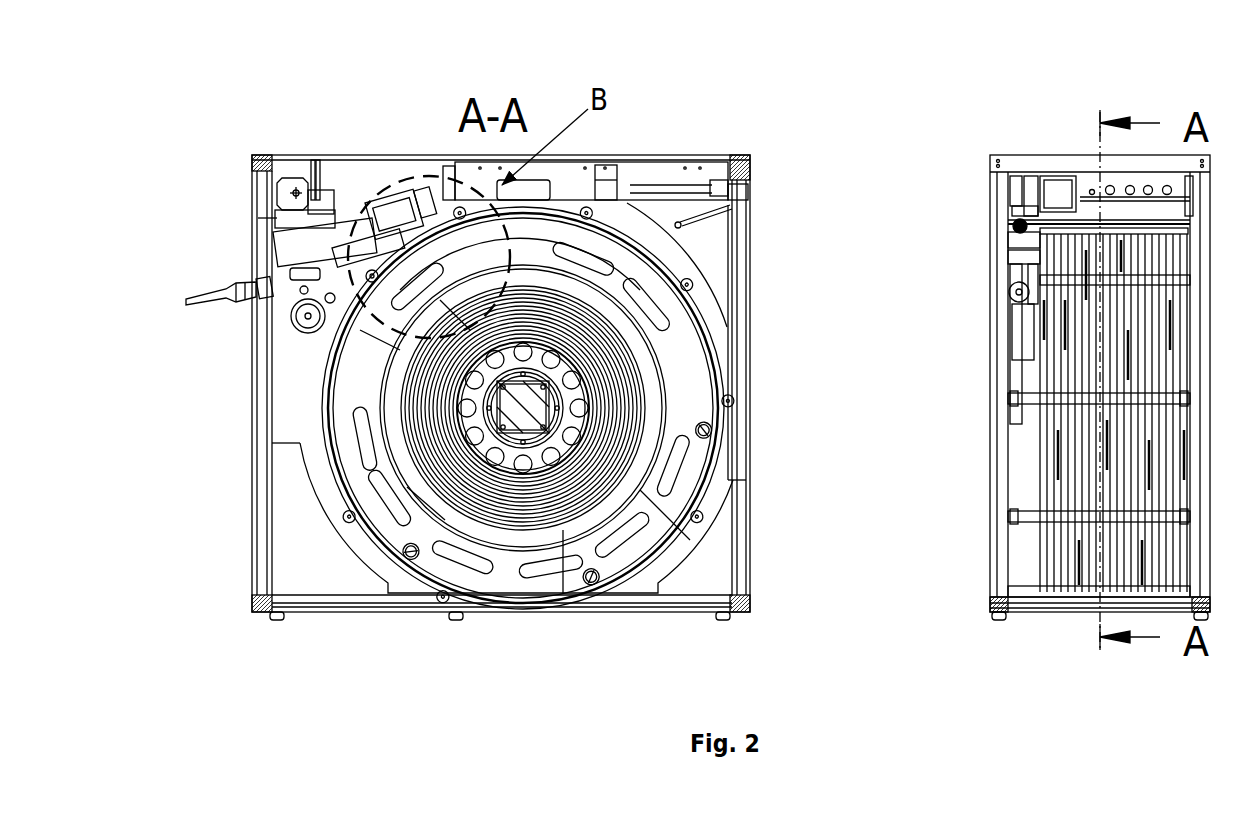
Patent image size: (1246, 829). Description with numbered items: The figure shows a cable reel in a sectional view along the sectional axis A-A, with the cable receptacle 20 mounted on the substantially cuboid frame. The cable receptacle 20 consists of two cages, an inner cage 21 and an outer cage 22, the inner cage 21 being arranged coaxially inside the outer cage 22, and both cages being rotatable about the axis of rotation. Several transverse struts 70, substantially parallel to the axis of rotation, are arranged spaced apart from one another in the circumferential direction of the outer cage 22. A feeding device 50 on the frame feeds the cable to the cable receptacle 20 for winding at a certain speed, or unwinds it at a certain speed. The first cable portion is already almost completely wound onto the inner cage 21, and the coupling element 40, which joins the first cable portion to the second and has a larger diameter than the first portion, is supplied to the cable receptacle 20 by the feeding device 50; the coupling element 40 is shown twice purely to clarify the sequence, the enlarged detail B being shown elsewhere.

The cable receptacle 20 is at (597, 391).
The inner cage 21 is at (633, 342).
The outer cage 22 is at (648, 290).
The coupling element 40 is at (402, 165).
The feeding device 50 is at (302, 162).
The transverse struts 70 is at (1055, 512).